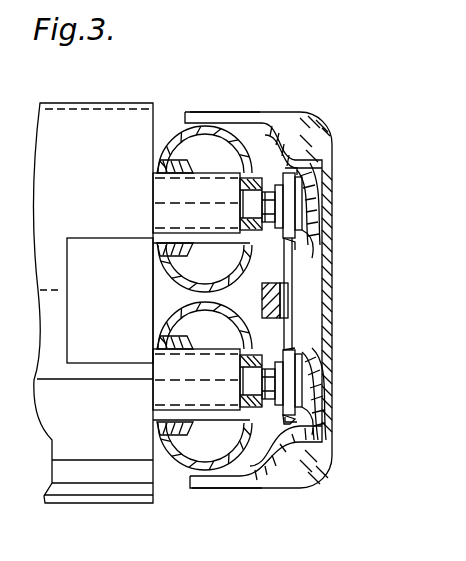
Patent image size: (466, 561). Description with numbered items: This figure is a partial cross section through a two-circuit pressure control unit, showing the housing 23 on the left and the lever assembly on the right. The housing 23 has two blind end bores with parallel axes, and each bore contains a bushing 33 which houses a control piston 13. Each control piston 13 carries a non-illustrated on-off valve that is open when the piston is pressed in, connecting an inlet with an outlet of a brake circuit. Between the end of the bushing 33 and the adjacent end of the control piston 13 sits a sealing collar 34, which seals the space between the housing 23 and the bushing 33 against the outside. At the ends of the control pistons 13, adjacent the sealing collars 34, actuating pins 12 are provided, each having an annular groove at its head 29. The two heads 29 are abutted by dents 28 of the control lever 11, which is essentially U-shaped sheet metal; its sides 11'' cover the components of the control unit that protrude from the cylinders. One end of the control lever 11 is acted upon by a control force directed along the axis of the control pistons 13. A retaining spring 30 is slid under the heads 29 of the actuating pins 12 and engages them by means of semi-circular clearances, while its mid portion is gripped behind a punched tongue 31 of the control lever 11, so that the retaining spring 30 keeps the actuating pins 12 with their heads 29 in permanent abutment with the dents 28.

The control lever 11 is at (300, 300).
The sides of the control lever 11'' is at (246, 291).
The actuating pin 12 is at (247, 200).
The control piston 13 is at (183, 199).
The housing 23 is at (105, 123).
The dent 28 is at (312, 207).
The head 29 is at (318, 163).
The retaining spring 30 is at (288, 330).
The punched tongue 31 is at (278, 298).
The bushing 33 is at (157, 163).
The sealing collar 34 is at (160, 137).